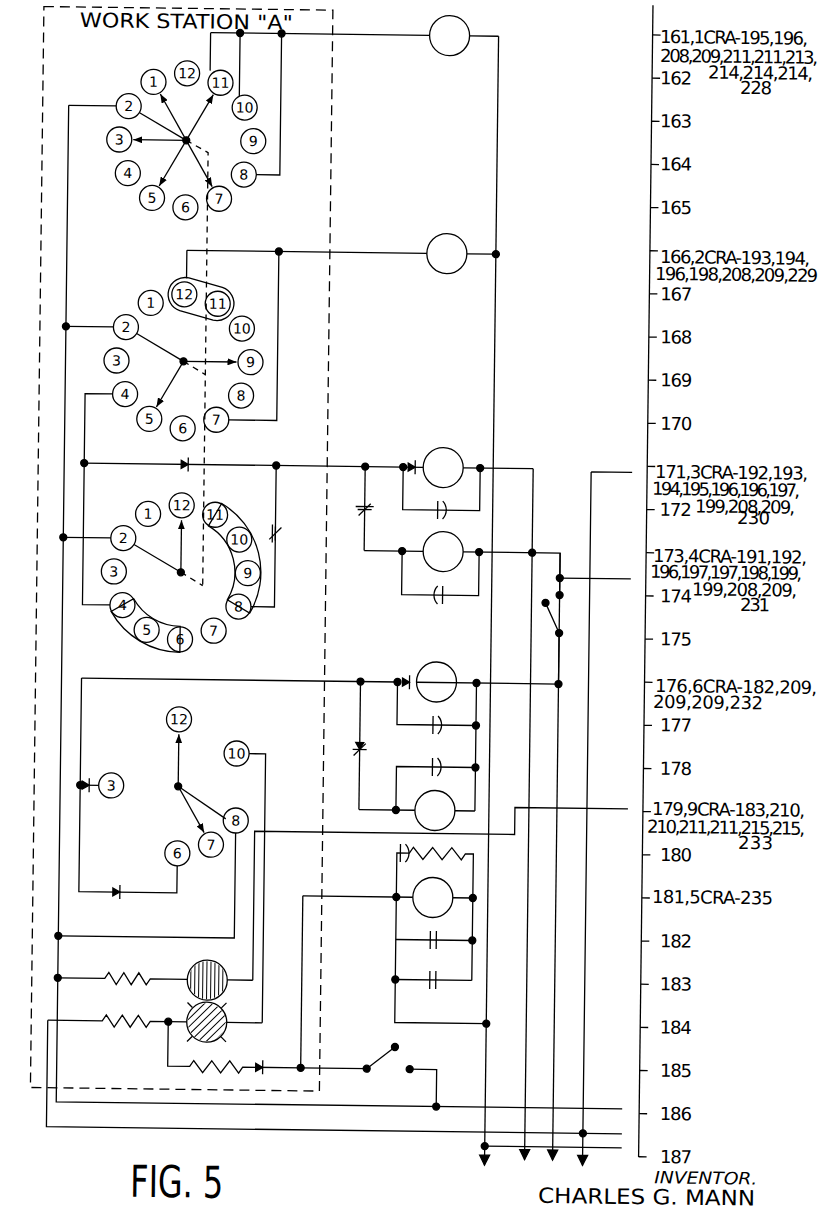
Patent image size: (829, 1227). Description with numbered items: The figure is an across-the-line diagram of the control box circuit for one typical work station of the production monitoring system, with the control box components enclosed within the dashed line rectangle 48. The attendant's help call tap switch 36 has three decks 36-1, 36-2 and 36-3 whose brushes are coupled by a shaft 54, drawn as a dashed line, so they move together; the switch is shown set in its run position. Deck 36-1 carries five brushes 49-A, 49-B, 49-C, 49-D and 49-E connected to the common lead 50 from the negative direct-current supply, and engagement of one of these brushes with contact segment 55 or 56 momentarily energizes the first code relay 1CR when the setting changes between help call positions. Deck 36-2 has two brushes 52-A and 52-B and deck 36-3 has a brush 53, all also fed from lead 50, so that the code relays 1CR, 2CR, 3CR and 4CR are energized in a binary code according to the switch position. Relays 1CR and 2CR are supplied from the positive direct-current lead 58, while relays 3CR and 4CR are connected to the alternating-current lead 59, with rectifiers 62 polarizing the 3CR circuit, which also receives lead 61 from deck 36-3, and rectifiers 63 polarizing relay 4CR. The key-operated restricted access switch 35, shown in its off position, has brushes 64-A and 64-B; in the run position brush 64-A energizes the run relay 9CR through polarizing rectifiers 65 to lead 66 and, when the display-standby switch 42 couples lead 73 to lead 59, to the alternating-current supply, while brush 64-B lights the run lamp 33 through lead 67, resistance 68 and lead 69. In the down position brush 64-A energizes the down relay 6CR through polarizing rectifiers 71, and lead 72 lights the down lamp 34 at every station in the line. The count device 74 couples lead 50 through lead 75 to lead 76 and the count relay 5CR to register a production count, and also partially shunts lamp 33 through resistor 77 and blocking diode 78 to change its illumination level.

The run indicator 33 is at (238, 1011).
The down indicator 34 is at (218, 962).
The restricted access switch 35 is at (154, 808).
The multiposition tap switch 36 is at (262, 233).
The first deck of switch 36 36-1 is at (176, 124).
The second deck of switch 36 36-2 is at (173, 355).
The third deck of switch 36 36-3 is at (231, 557).
The display-standby switch 42 is at (564, 614).
The dashed line rectangle 48 is at (334, 208).
The brush 49-A is at (210, 163).
The brush 49-B is at (181, 164).
The brush 49-C is at (159, 153).
The brush 49-D is at (183, 115).
The brush 49-E is at (211, 117).
The common lead 50 is at (68, 462).
The brush 52-A is at (209, 349).
The brush 52-B is at (181, 384).
The brush 53 is at (190, 538).
The shaft 54 is at (211, 440).
The contact segment 55 is at (209, 84).
The contact segment 56 is at (235, 104).
The lead 58 is at (501, 78).
The lead 59 is at (532, 477).
The lead 61 is at (92, 490).
The rectifiers 62 is at (190, 461).
The rectifiers 63 is at (284, 538).
The brush 64-A is at (182, 748).
The brush 64-B is at (203, 800).
The polarizing rectifiers 65 is at (376, 748).
The lead 66 is at (500, 677).
The lead 67 is at (277, 850).
The resistance 68 is at (153, 1018).
The lead 69 is at (599, 470).
The polarizing rectifiers 71 is at (414, 672).
The lead 72 is at (604, 803).
The lead 73 is at (569, 693).
The count device 74 is at (392, 1058).
The lead 75 is at (452, 1075).
The lead 76 is at (322, 1068).
The resistor 77 is at (204, 1068).
The blocking diode 78 is at (275, 1057).
The first code relay 1CR is at (354, 35).
The second code relay 2CR is at (341, 252).
The third code relay 3CR is at (447, 500).
The fourth code relay 4CR is at (461, 568).
The count relay 5CR is at (394, 933).
The down status relay 6CR is at (417, 723).
The run relay 9CR is at (419, 787).